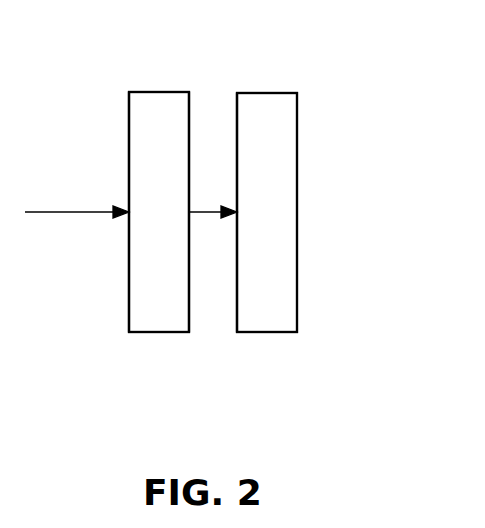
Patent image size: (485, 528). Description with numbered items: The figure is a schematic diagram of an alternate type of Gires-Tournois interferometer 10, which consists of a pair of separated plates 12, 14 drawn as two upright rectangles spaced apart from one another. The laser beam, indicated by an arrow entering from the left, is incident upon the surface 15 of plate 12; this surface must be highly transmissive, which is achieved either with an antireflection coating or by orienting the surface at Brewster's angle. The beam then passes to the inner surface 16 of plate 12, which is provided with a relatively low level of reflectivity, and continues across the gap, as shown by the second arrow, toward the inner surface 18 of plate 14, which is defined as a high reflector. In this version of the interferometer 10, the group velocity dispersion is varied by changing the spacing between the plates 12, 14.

The Gires-Tournois interferometer 10 is at (320, 119).
The plate 12 is at (155, 333).
The plate 14 is at (270, 330).
The surface 15 is at (129, 303).
The inner surface 16 is at (190, 110).
The inner surface 18 is at (237, 320).